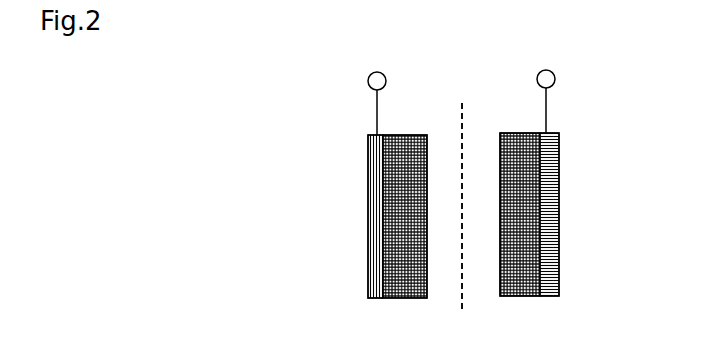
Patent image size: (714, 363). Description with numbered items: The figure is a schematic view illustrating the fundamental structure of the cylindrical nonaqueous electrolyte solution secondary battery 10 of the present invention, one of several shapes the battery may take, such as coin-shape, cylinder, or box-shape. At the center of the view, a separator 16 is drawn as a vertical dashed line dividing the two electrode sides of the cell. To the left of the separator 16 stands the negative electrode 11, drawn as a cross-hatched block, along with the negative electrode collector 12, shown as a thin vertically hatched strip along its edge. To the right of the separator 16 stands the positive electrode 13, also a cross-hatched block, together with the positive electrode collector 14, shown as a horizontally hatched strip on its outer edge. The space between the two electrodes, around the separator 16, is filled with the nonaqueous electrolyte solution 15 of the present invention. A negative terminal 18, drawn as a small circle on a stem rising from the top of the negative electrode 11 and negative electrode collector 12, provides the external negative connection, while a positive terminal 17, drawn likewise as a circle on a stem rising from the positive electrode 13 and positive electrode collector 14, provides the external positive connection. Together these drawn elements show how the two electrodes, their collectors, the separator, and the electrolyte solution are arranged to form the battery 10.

The cylindrical nonaqueous electrolyte solution secondary battery 10 is at (463, 58).
The negative electrode 11 is at (405, 300).
The negative electrode collector 12 is at (369, 285).
The positive electrode 13 is at (515, 297).
The positive electrode collector 14 is at (549, 297).
The nonaqueous electrolyte solution 15 is at (488, 217).
The separator 16 is at (462, 118).
The positive terminal 17 is at (556, 73).
The negative terminal 18 is at (387, 76).